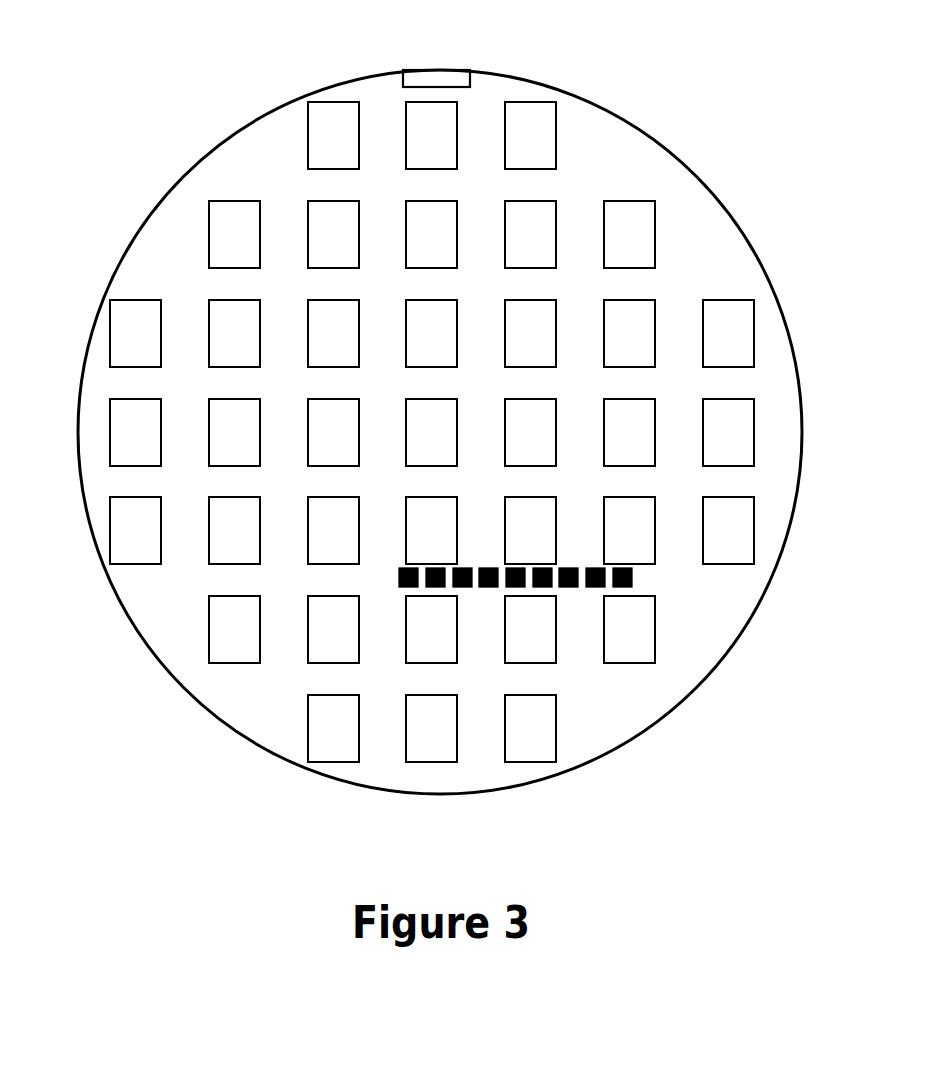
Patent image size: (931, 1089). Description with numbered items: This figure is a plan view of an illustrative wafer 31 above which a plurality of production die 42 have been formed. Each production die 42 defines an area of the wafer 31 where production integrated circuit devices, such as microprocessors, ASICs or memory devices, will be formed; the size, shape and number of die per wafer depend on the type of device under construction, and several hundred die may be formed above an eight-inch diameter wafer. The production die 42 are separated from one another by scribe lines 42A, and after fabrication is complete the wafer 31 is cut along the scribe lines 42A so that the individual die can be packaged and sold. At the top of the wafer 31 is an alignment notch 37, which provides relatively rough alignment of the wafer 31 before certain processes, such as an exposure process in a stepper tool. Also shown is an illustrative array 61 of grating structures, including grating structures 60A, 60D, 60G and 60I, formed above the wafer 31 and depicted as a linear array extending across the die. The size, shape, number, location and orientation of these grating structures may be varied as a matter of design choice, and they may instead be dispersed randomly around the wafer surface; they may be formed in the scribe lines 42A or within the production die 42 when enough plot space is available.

The wafer 31 is at (265, 172).
The alignment notch 37 is at (432, 78).
The production die 42 is at (527, 118).
The scribe lines 42A is at (628, 285).
The grating structure 60A is at (402, 587).
The grating structure 60D is at (488, 587).
The grating structure 60G is at (570, 587).
The grating structure 60I is at (620, 584).
The array 61 is at (654, 578).